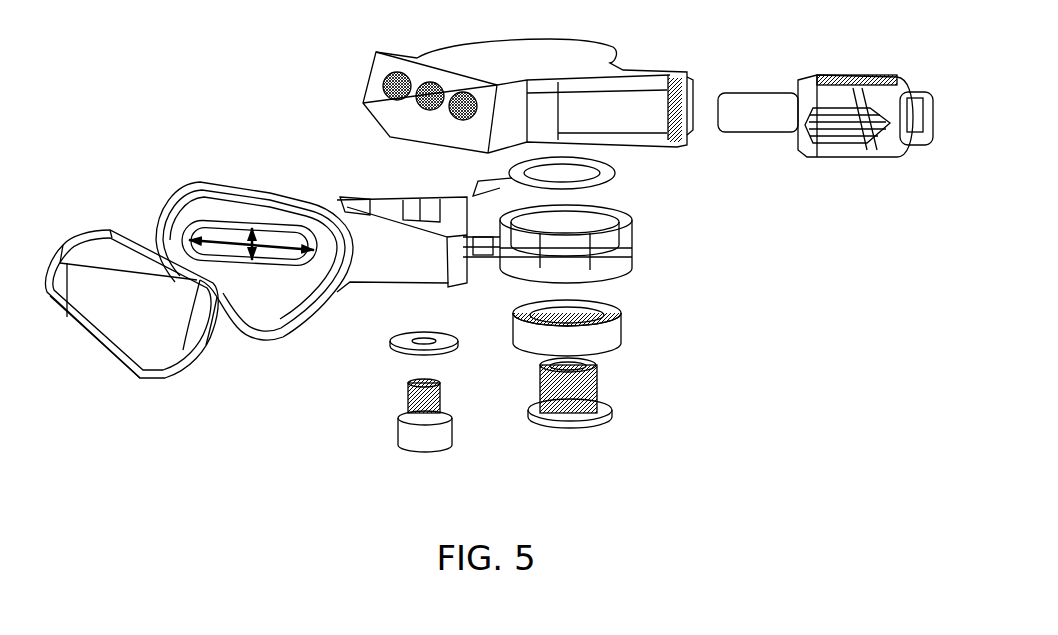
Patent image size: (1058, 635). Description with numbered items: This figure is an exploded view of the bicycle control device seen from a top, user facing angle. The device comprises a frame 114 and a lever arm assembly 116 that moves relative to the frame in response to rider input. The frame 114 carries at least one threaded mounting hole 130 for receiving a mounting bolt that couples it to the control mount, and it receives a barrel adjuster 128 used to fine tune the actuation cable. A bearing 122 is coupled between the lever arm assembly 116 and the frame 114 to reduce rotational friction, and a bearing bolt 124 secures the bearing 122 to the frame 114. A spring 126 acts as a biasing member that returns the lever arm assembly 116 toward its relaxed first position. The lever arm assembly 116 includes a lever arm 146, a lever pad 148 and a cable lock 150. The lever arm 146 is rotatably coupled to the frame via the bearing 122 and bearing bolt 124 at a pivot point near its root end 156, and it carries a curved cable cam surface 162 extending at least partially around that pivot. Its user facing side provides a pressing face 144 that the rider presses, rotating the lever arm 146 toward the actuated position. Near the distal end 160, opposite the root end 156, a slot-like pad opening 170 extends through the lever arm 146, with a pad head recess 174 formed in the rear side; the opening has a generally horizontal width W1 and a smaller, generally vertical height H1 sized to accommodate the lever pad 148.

The frame 114 is at (487, 55).
The lever arm assembly 116 is at (127, 396).
The bearing 122 is at (610, 327).
The bearing bolt 124 is at (587, 413).
The spring 126 is at (614, 173).
The barrel adjuster 128 is at (830, 152).
The threaded mounting hole 130 is at (388, 88).
The pressing face 144 is at (155, 328).
The lever arm 146 is at (342, 222).
The lever pad 148 is at (89, 260).
The cable lock 150 is at (373, 400).
The root end 156 is at (650, 237).
The distal end 160 is at (142, 182).
The cable cam surface 162 is at (613, 258).
The pad opening 170 is at (232, 233).
The pad head recess 174 is at (303, 293).
The width W1 is at (238, 247).
The height H1 is at (253, 254).